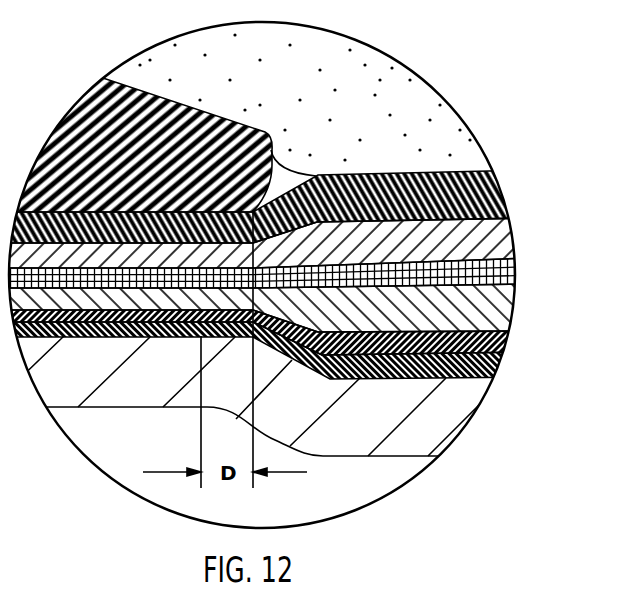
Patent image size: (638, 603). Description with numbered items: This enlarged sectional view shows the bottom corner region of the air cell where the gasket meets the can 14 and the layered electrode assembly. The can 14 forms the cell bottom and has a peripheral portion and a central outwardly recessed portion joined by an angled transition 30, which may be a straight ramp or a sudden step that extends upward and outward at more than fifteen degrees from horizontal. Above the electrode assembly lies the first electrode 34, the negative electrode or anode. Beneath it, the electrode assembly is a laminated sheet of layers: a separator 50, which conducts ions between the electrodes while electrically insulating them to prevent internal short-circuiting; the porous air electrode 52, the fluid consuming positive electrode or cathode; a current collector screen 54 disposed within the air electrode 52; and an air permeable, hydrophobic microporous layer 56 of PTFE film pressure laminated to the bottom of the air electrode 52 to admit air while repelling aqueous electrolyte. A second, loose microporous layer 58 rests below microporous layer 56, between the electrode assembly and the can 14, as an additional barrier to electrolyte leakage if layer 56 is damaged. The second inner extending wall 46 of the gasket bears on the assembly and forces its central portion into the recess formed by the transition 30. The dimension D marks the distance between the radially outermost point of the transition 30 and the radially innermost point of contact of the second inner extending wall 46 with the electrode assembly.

The can 14 is at (107, 407).
The transition 30 is at (252, 410).
The first electrode 34 is at (423, 100).
The second inner extending wall 46 is at (185, 100).
The separator 50 is at (505, 190).
The air electrode 52 is at (512, 238).
The current collector screen 54 is at (517, 273).
The microporous layer 56 is at (505, 343).
The microporous layer 58 is at (497, 367).